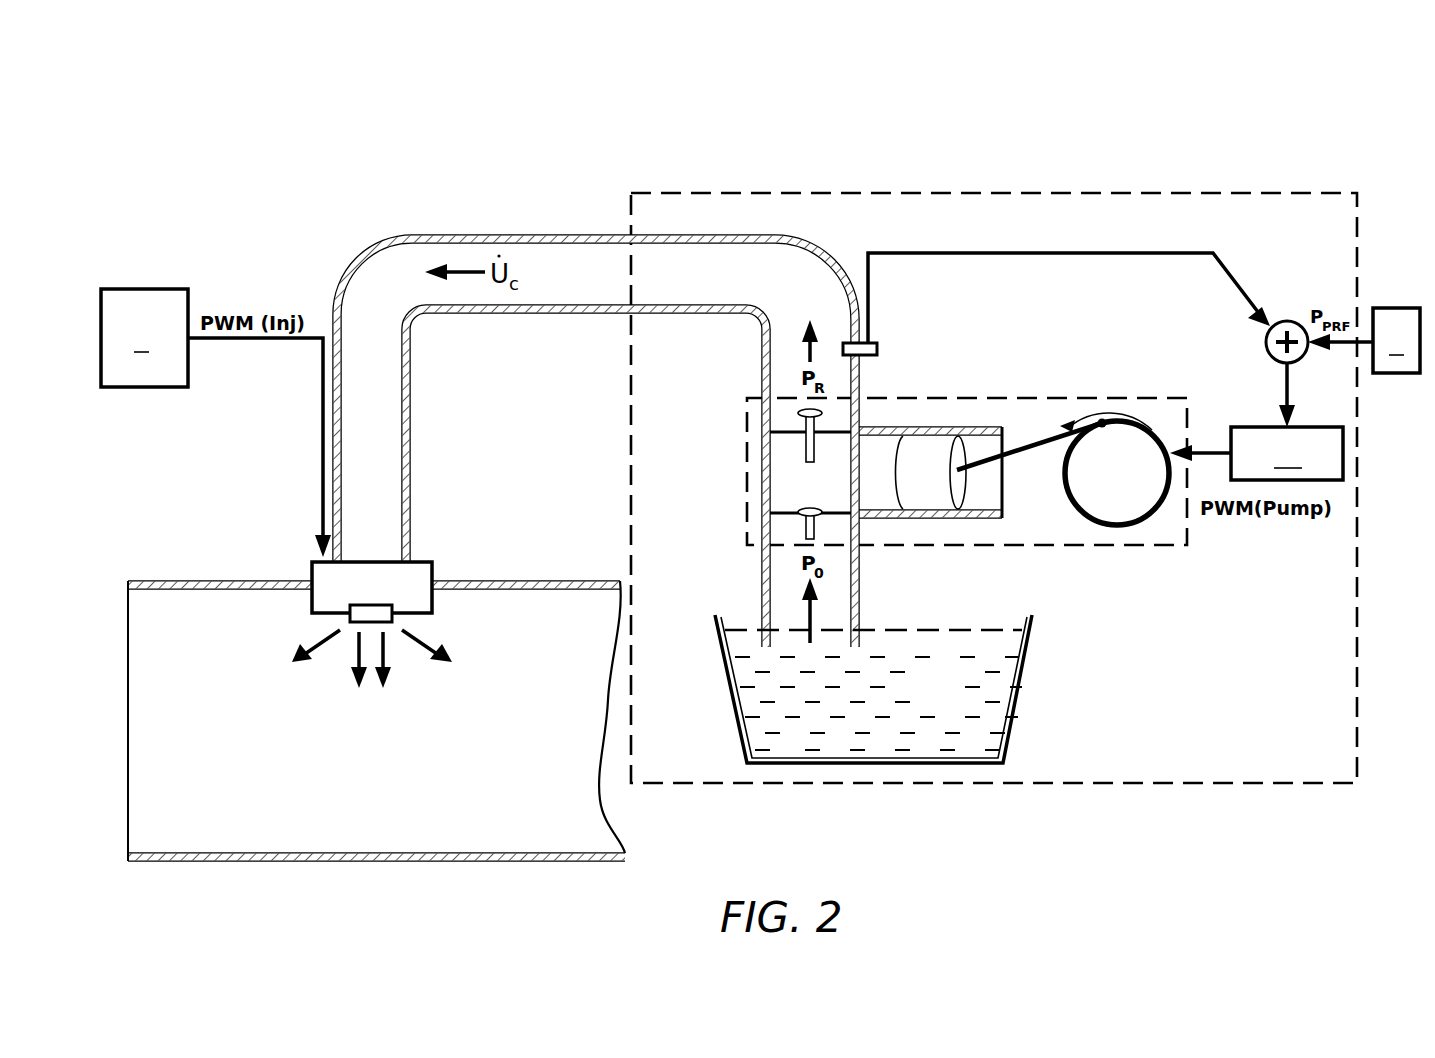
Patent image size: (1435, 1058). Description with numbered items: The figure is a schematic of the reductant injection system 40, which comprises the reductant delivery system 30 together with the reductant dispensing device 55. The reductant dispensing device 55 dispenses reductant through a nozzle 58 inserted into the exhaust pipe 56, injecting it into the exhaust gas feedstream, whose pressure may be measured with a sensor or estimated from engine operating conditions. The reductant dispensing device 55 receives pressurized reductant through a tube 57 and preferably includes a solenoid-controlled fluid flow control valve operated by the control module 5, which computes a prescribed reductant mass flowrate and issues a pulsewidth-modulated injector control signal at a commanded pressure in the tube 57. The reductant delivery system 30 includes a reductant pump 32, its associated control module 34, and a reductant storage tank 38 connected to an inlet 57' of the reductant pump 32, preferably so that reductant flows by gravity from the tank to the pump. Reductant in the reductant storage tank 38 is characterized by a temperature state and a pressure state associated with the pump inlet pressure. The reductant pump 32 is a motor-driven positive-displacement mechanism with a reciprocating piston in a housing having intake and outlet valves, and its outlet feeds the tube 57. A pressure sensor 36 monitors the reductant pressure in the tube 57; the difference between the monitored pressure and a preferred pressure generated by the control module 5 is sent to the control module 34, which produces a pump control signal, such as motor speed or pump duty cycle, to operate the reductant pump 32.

The control module 5 is at (760, 338).
The reductant delivery system 30 is at (1330, 239).
The reductant pump 32 is at (1117, 398).
The control module 34 is at (1287, 453).
The pressure sensor 36 is at (877, 348).
The reductant storage tank 38 is at (988, 693).
The reductant injection system 40 is at (386, 206).
The reductant dispensing device 55 is at (432, 572).
The exhaust pipe 56 is at (215, 580).
The tube 57 is at (586, 478).
The inlet 57' is at (730, 591).
The nozzle 58 is at (378, 613).